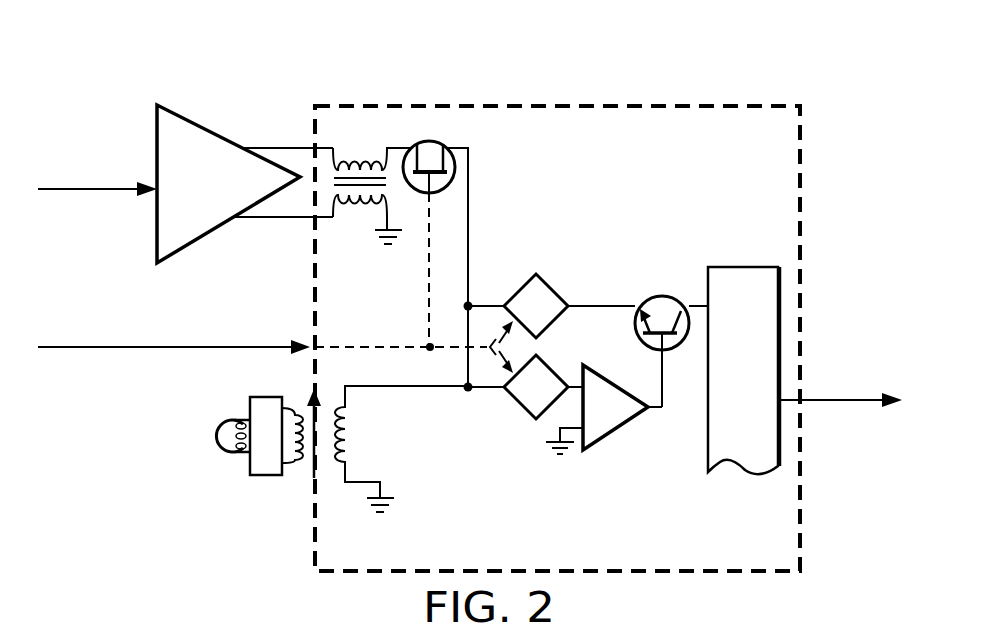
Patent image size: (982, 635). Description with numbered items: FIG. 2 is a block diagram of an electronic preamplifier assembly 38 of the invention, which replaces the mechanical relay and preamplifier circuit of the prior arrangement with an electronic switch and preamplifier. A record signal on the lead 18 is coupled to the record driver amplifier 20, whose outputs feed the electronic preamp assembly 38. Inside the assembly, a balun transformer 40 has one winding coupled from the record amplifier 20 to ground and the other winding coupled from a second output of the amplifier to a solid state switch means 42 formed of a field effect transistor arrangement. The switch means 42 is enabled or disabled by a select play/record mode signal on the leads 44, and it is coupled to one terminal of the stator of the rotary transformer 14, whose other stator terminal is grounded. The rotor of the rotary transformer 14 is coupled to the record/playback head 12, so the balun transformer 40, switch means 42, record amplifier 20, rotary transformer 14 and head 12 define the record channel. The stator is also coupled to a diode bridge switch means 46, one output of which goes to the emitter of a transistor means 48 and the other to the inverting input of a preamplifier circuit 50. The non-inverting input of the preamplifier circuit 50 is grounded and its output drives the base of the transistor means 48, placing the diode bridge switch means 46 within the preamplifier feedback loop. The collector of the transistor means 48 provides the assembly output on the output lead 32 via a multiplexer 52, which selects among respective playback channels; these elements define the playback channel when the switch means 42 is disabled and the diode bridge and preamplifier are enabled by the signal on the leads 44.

The record/playback head 12 is at (226, 422).
The rotary transformer 14 is at (300, 490).
The lead 18 is at (110, 193).
The record driver amplifier 20 is at (207, 127).
The output lead 32 is at (828, 402).
The electronic preamplifier assembly 38 is at (422, 97).
The balun transformer 40 is at (360, 148).
The solid state switch means 42 is at (438, 144).
The leads 44 is at (118, 349).
The diode bridge switch means 46 is at (534, 360).
The transistor means 48 is at (660, 297).
The preamplifier circuit 50 is at (598, 445).
The multiplexer 52 is at (733, 267).